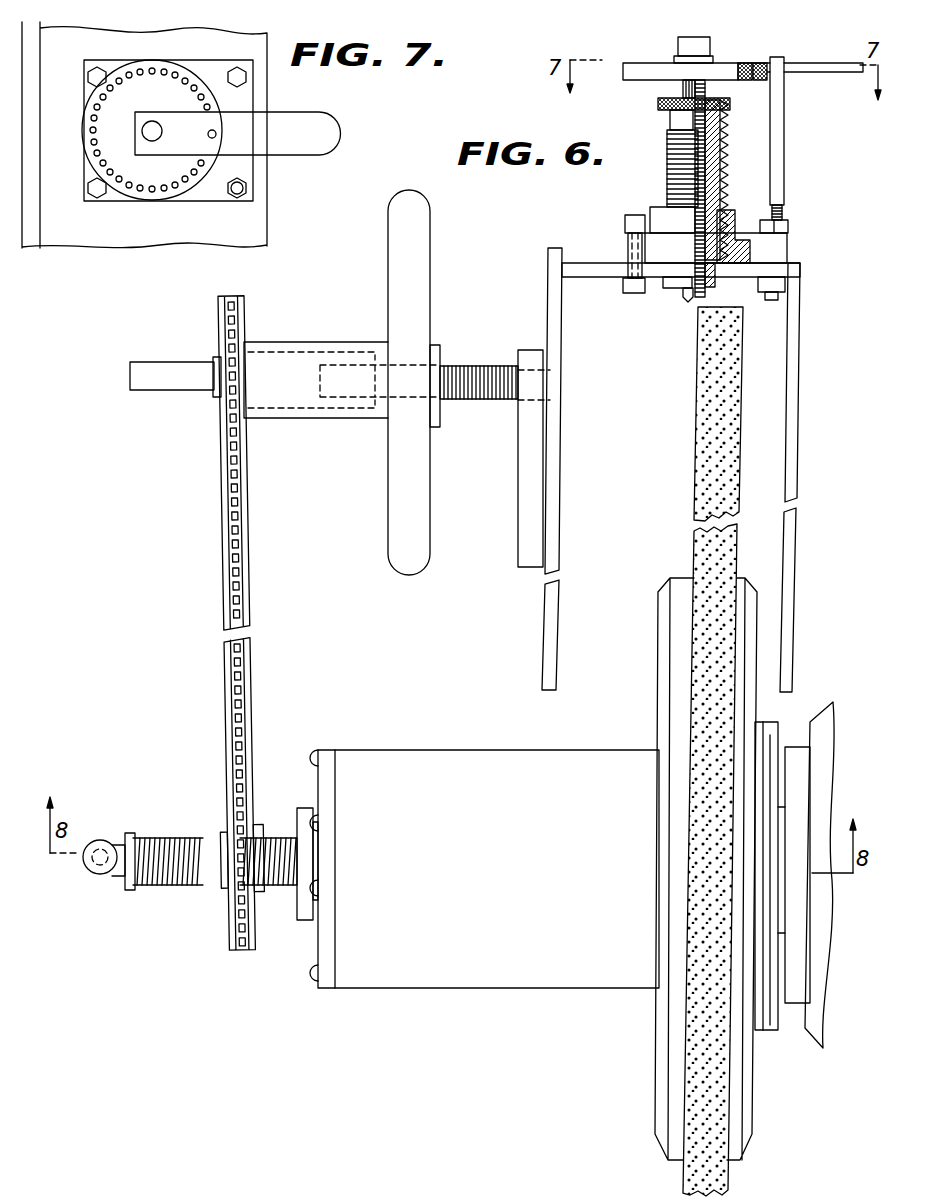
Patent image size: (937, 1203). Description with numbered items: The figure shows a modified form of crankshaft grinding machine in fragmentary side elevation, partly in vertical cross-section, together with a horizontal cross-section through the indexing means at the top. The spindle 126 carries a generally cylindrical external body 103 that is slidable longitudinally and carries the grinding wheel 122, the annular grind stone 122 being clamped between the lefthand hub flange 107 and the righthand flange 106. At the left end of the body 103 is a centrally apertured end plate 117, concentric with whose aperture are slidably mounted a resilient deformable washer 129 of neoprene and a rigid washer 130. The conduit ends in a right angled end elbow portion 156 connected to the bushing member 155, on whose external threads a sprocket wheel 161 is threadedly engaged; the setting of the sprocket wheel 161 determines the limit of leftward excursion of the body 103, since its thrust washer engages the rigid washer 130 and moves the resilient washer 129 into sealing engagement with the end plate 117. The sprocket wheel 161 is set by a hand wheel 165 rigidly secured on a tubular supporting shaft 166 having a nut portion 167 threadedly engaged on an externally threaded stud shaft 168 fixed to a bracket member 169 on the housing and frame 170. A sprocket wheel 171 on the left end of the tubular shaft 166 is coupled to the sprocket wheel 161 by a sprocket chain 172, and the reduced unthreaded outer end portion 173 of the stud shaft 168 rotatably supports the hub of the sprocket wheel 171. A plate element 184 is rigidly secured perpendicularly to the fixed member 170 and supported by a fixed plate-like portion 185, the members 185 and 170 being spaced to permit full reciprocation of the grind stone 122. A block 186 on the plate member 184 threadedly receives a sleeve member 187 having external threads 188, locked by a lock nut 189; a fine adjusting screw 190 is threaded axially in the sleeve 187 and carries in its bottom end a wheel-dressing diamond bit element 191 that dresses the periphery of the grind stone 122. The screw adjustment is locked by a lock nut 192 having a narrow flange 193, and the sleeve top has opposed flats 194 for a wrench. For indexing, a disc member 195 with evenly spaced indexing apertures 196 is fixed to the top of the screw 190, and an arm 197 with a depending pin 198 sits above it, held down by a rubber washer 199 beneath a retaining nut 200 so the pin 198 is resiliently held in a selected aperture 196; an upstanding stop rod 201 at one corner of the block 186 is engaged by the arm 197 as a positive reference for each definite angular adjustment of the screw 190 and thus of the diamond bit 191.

In FIG. 6, the cylindrical external body 103 is at (409, 752).
In FIG. 6, the righthand flange 106 is at (752, 1098).
In FIG. 6, the lefthand hub flange 107 is at (663, 1078).
In FIG. 6, the end plate 117 is at (320, 947).
In FIG. 6, the grinding wheel 122 is at (700, 382).
In FIG. 6, the spindle 126 is at (793, 748).
In FIG. 6, the resilient deformable washer 129 is at (304, 806).
In FIG. 6, the rigid washer 130 is at (297, 806).
In FIG. 6, the bushing member 155 is at (160, 885).
In FIG. 6, the right angled end elbow portion 156 is at (88, 872).
In FIG. 6, the sprocket wheel 161 is at (215, 925).
In FIG. 6, the hand wheel 165 is at (397, 515).
In FIG. 6, the tubular supporting shaft 166 is at (297, 342).
In FIG. 6, the nut portion 167 is at (435, 345).
In FIG. 6, the externally threaded stud shaft 168 is at (470, 372).
In FIG. 6, the bracket member 169 is at (522, 440).
In FIG. 6, the housing and frame 170 is at (549, 282).
In FIG. 6, the sprocket wheel 171 is at (222, 398).
In FIG. 6, the sprocket chain 172 is at (238, 574).
In FIG. 6, the reduced unthreaded outer end portion 173 is at (153, 372).
In FIG. 6, the plate element 184 is at (592, 280).
In FIG. 6, the fixed plate-like portion 185 is at (786, 372).
In FIG. 7, the block 186 is at (208, 195).
In FIG. 6, the block 186 is at (746, 235).
In FIG. 6, the sleeve member 187 is at (668, 175).
In FIG. 6, the external threads 188 is at (714, 164).
In FIG. 6, the lock nut 189 is at (657, 218).
In FIG. 6, the fine adjusting screw 190 is at (708, 140).
In FIG. 6, the wheel-dressing diamond bit element 191 is at (686, 300).
In FIG. 6, the lock nut 192 is at (705, 92).
In FIG. 6, the narrow flange 193 is at (660, 104).
In FIG. 6, the flats 194 is at (672, 122).
In FIG. 7, the indexing disc member 195 is at (82, 140).
In FIG. 6, the indexing disc member 195 is at (624, 70).
In FIG. 7, the indexing apertures 196 is at (100, 100).
In FIG. 6, the indexing apertures 196 is at (752, 78).
In FIG. 7, the arm 197 is at (322, 102).
In FIG. 6, the arm 197 is at (815, 65).
In FIG. 7, the depending pin 198 is at (216, 134).
In FIG. 6, the depending pin 198 is at (756, 64).
In FIG. 6, the rubber washer 199 is at (674, 60).
In FIG. 6, the retaining nut 200 is at (678, 48).
In FIG. 7, the upstanding stop rod 201 is at (246, 186).
In FIG. 6, the upstanding stop rod 201 is at (785, 162).